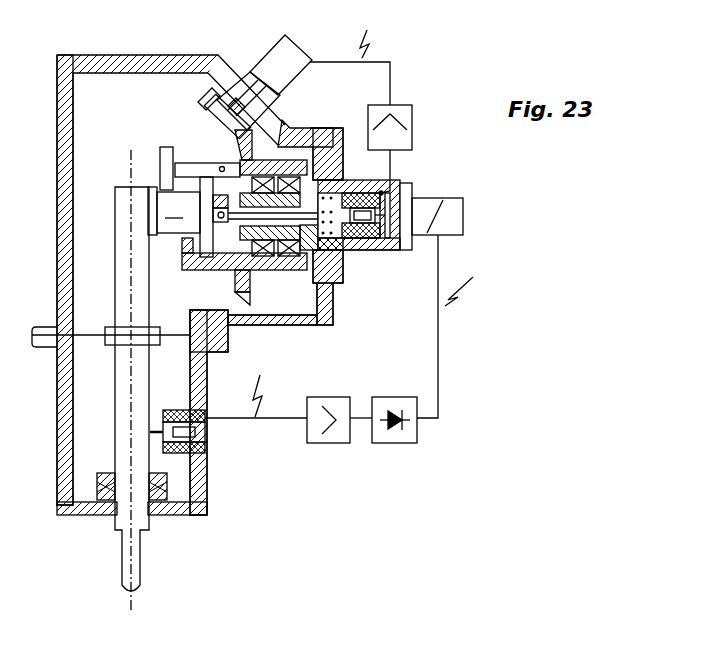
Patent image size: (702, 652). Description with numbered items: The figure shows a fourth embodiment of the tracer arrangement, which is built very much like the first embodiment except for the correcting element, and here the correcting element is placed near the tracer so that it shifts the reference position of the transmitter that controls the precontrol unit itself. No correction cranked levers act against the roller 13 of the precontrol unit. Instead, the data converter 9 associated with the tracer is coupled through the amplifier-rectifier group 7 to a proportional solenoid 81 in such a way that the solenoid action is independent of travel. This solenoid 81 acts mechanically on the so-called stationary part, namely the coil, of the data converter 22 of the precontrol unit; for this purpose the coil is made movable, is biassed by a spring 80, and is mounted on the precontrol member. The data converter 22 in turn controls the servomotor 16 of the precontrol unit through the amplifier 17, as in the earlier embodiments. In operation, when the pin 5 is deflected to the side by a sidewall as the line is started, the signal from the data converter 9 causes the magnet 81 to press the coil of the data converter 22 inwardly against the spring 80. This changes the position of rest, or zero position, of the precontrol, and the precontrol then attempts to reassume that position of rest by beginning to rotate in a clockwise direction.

The pin 5 is at (133, 397).
The amplifier-rectifier group 7 is at (393, 436).
The data converter 9 is at (205, 447).
The roller 13 is at (165, 150).
The servomotor 16 is at (277, 80).
The amplifier 17 is at (412, 124).
The data converter 22 is at (370, 250).
The spring 80 is at (336, 192).
The proportional solenoid 81 is at (463, 220).